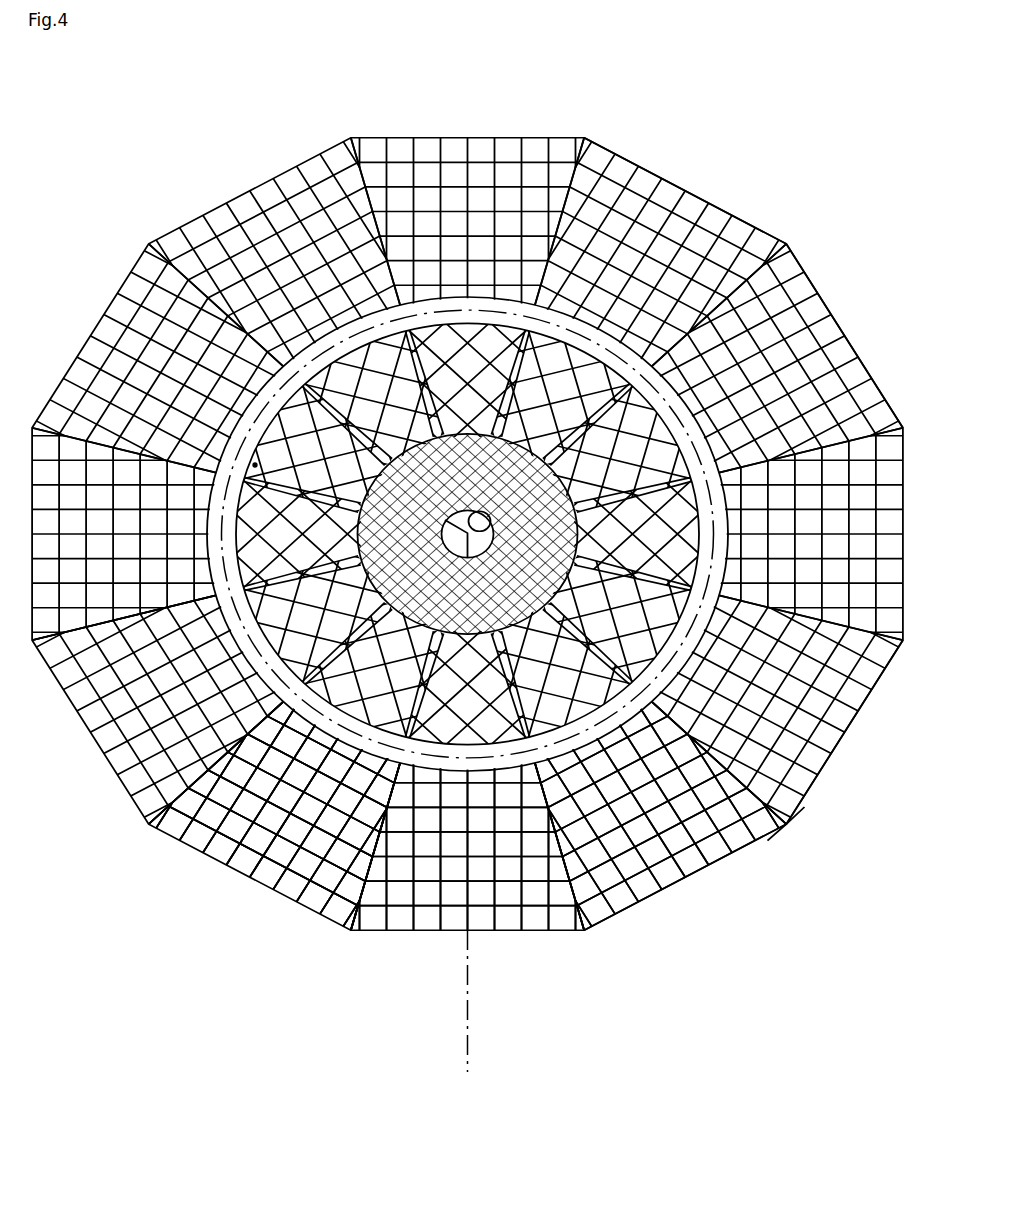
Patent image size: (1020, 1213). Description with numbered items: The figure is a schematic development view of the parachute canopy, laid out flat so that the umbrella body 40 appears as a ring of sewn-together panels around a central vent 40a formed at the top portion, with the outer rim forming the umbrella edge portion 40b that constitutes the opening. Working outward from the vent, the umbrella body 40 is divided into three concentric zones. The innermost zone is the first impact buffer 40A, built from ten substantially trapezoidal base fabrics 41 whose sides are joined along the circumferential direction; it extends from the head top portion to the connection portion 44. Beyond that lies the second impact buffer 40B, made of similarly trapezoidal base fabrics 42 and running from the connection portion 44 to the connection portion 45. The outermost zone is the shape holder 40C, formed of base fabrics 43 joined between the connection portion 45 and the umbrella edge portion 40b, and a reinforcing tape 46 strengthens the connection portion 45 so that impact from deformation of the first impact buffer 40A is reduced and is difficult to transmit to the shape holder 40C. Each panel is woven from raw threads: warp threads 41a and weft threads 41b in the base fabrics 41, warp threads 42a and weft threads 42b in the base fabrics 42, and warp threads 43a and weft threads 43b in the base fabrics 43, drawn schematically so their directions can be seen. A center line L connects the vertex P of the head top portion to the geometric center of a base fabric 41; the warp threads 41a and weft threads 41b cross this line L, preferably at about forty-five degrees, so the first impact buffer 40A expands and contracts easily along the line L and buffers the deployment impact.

The umbrella body 40 is at (93, 121).
The base fabrics 41 is at (483, 330).
The base fabrics 42 is at (375, 388).
The base fabrics 43 is at (133, 793).
The connection portion 44 is at (596, 395).
The connection portion 45 is at (100, 290).
The reinforcing tape 46 is at (175, 648).
The warp threads 41a is at (250, 760).
The weft threads 41b is at (738, 832).
The warp threads 42a is at (352, 838).
The weft threads 42b is at (592, 830).
The warp threads 43a is at (438, 872).
The weft threads 43b is at (503, 907).
The vent 40a is at (785, 375).
The umbrella edge portion 40b is at (690, 198).
The first impact buffer 40A is at (797, 803).
The second impact buffer 40B is at (750, 678).
The shape holder 40C is at (795, 815).
The vertex P is at (255, 465).
The center line L is at (466, 1054).